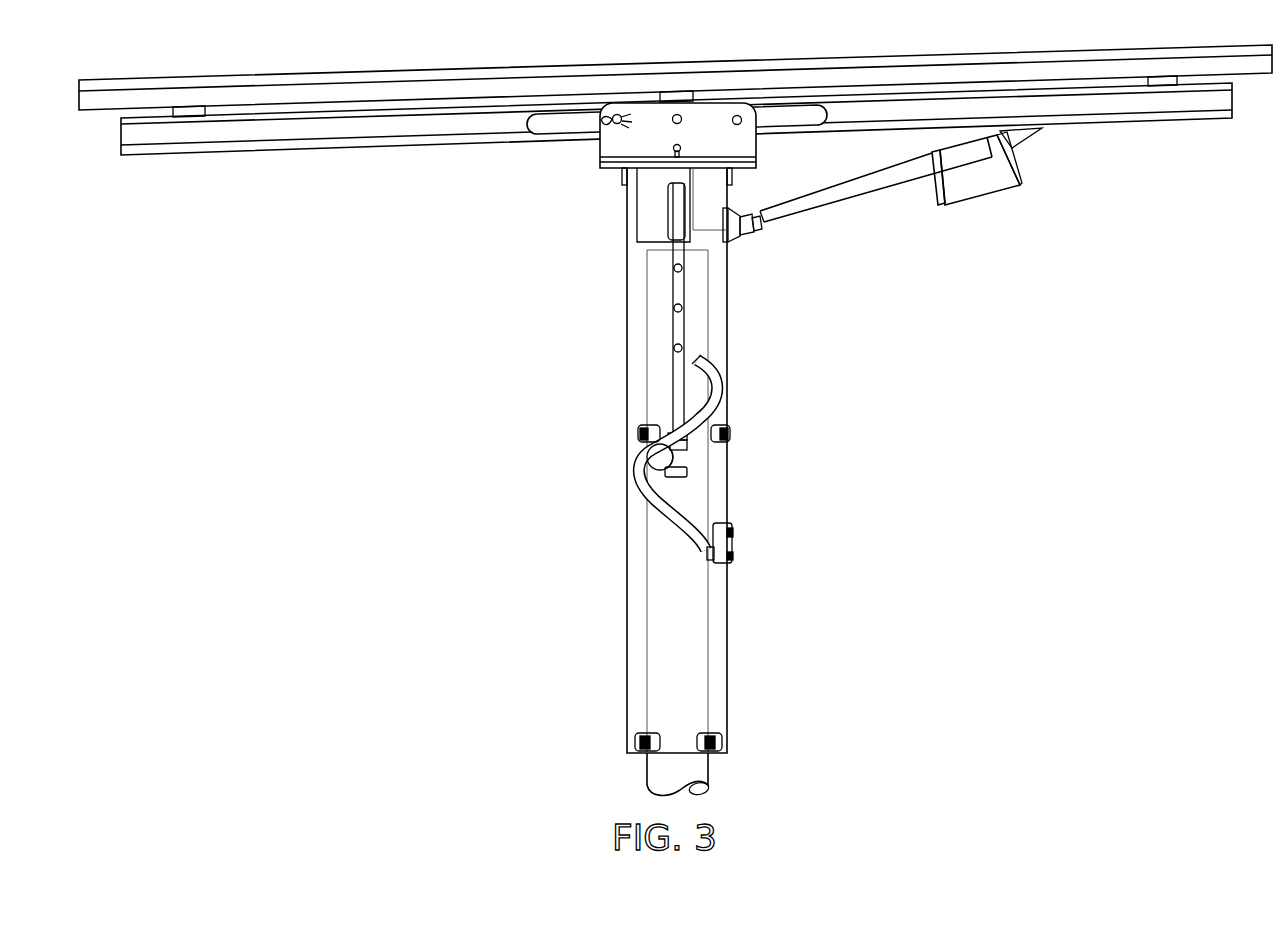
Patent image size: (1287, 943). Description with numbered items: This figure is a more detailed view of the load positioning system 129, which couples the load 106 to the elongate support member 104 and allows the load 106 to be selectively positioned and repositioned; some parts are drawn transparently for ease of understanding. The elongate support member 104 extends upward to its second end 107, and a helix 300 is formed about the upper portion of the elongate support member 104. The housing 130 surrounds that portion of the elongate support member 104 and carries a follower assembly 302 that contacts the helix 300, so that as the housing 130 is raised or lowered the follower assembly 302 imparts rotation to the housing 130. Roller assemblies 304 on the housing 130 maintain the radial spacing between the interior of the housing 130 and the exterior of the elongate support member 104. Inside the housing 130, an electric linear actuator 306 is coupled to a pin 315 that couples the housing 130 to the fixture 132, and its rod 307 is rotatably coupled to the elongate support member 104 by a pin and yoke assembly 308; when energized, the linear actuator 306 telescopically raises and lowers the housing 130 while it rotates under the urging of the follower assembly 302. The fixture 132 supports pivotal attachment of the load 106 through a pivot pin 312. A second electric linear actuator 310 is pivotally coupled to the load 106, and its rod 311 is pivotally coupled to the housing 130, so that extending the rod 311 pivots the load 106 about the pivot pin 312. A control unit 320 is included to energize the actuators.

The load 106 is at (838, 57).
The fixture 132 is at (603, 153).
The pivot pin 312 is at (617, 114).
The pin 315 is at (677, 144).
The control unit 320 is at (718, 198).
The electric linear actuator 306 is at (645, 217).
The second end 107 is at (645, 255).
The rod 307 is at (680, 256).
The rod 311 is at (841, 199).
The electric linear actuator 310 is at (972, 203).
The load positioning system 129 is at (875, 343).
The helix 300 is at (715, 391).
The roller assemblies 304 is at (640, 431).
The pin and yoke assembly 308 is at (688, 456).
The follower assembly 302 is at (732, 544).
The housing 130 is at (730, 678).
The elongate support member 104 is at (709, 777).